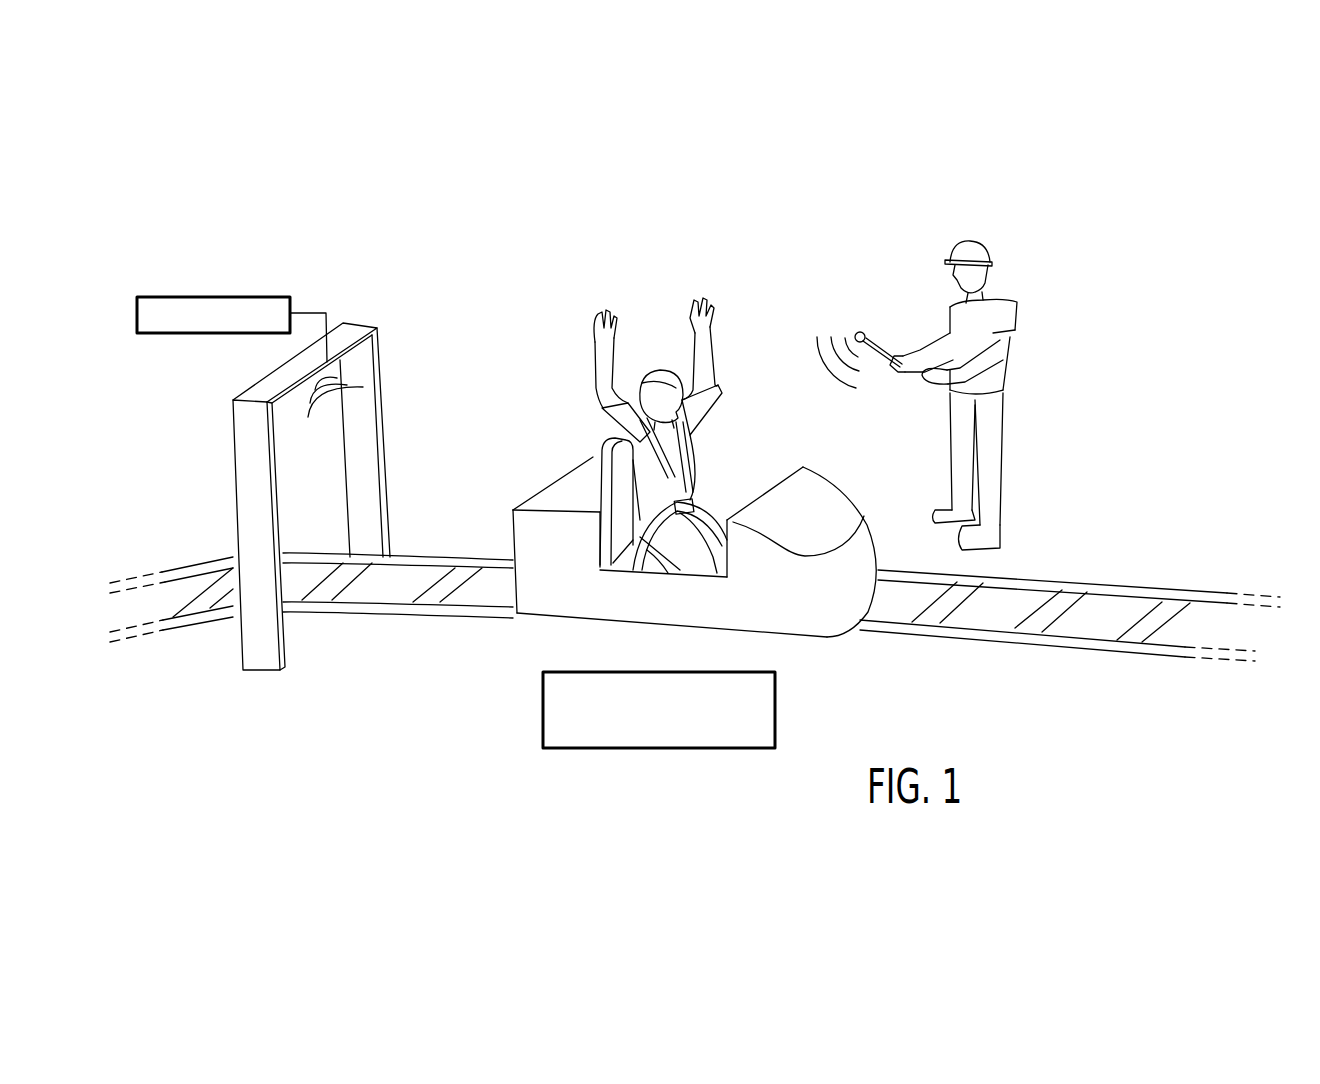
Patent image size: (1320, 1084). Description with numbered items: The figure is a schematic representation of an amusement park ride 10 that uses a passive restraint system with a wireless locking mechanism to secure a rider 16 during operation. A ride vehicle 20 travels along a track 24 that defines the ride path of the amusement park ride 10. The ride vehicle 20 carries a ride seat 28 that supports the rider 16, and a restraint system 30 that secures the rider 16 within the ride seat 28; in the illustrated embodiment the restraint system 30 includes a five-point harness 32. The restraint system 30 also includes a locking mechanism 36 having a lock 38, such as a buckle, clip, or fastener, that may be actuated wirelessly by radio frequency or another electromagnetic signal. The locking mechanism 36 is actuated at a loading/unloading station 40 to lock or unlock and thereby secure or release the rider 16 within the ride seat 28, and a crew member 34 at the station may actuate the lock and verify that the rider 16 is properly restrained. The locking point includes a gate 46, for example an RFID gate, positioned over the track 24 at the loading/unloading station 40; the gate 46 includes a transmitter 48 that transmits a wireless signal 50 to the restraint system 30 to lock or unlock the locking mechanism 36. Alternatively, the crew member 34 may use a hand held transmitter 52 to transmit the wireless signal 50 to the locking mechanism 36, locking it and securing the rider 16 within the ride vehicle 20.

The amusement park ride 10 is at (463, 230).
The rider 16 is at (636, 370).
The ride vehicle 20 is at (823, 490).
The track 24 is at (1007, 643).
The ride seat 28 is at (597, 480).
The restraint system 30 is at (650, 462).
The 5-point harness 32 is at (690, 453).
The crew member 34 is at (980, 243).
The locking mechanism 36 is at (662, 568).
The lock 38 is at (693, 507).
The loading/unloading station 40 is at (660, 749).
The gate 46 is at (363, 323).
The transmitter 48 is at (213, 338).
The wireless signal 50 is at (333, 423).
The hand held transmitter 52 is at (865, 332).